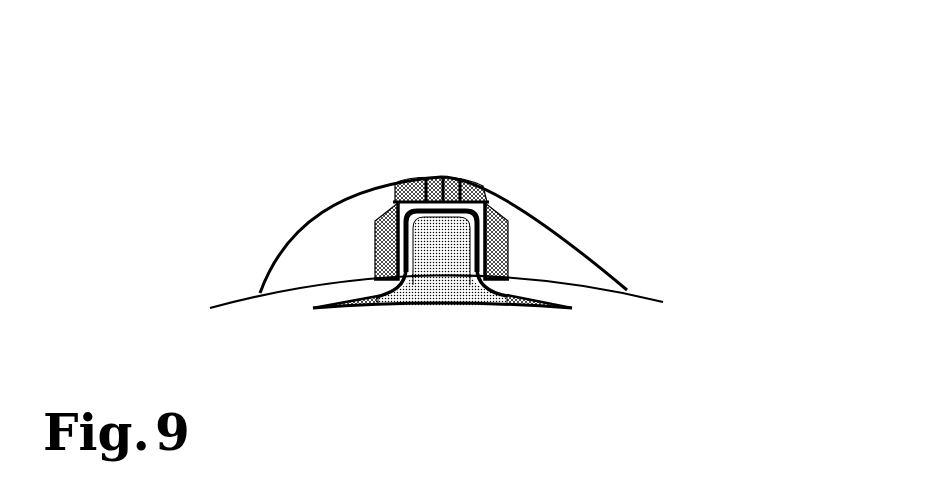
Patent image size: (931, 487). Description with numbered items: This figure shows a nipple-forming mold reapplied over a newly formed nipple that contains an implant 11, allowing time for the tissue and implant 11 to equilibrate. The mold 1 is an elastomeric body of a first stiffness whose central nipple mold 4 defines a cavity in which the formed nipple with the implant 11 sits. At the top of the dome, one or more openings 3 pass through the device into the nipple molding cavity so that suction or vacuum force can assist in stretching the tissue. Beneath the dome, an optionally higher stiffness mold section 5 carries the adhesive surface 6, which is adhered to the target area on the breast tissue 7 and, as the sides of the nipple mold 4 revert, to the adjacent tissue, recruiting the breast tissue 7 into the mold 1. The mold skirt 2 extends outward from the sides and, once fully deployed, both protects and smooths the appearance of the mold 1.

The mold 1 is at (617, 202).
The mold skirt 2 is at (337, 210).
The openings 3 is at (439, 177).
The nipple mold 4 is at (386, 252).
The mold section 5 is at (484, 203).
The adhesive surface 6 is at (485, 206).
The breast tissue 7 is at (648, 300).
The implant 11 is at (487, 290).